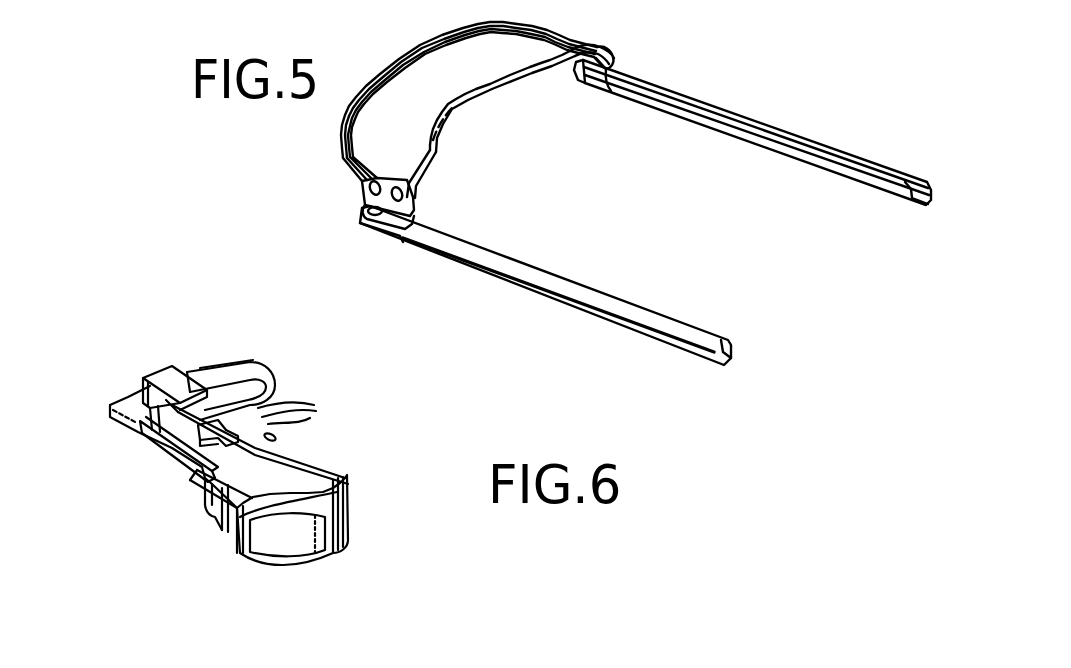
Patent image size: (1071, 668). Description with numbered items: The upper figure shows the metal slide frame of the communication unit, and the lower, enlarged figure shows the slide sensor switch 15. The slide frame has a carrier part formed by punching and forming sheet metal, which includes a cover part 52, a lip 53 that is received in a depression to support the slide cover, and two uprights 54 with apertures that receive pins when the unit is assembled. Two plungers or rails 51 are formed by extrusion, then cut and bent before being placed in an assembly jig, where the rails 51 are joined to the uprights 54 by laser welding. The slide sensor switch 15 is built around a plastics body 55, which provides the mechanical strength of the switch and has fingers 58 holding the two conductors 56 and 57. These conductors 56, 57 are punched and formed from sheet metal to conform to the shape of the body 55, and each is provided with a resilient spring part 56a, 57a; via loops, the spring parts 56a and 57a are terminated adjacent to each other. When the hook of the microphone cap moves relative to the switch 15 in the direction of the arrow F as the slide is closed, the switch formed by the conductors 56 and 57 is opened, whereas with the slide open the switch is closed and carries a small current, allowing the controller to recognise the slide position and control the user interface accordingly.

In FIG. 5, the rails 51 is at (718, 131).
In FIG. 5, the cover part 52 is at (447, 94).
In FIG. 5, the lip 53 is at (412, 72).
In FIG. 5, the uprights 54 is at (370, 221).
In FIG. 6, the plastics body 55 is at (313, 538).
In FIG. 6, the conductor 56 is at (343, 464).
In FIG. 6, the resilient spring part 56a is at (237, 370).
In FIG. 6, the conductor 57 is at (198, 440).
In FIG. 6, the resilient spring part 57a is at (162, 378).
In FIG. 6, the fingers 58 is at (304, 414).
In FIG. 6, the slide sensor switch 15 is at (349, 433).
In FIG. 6, the arrow F is at (163, 418).